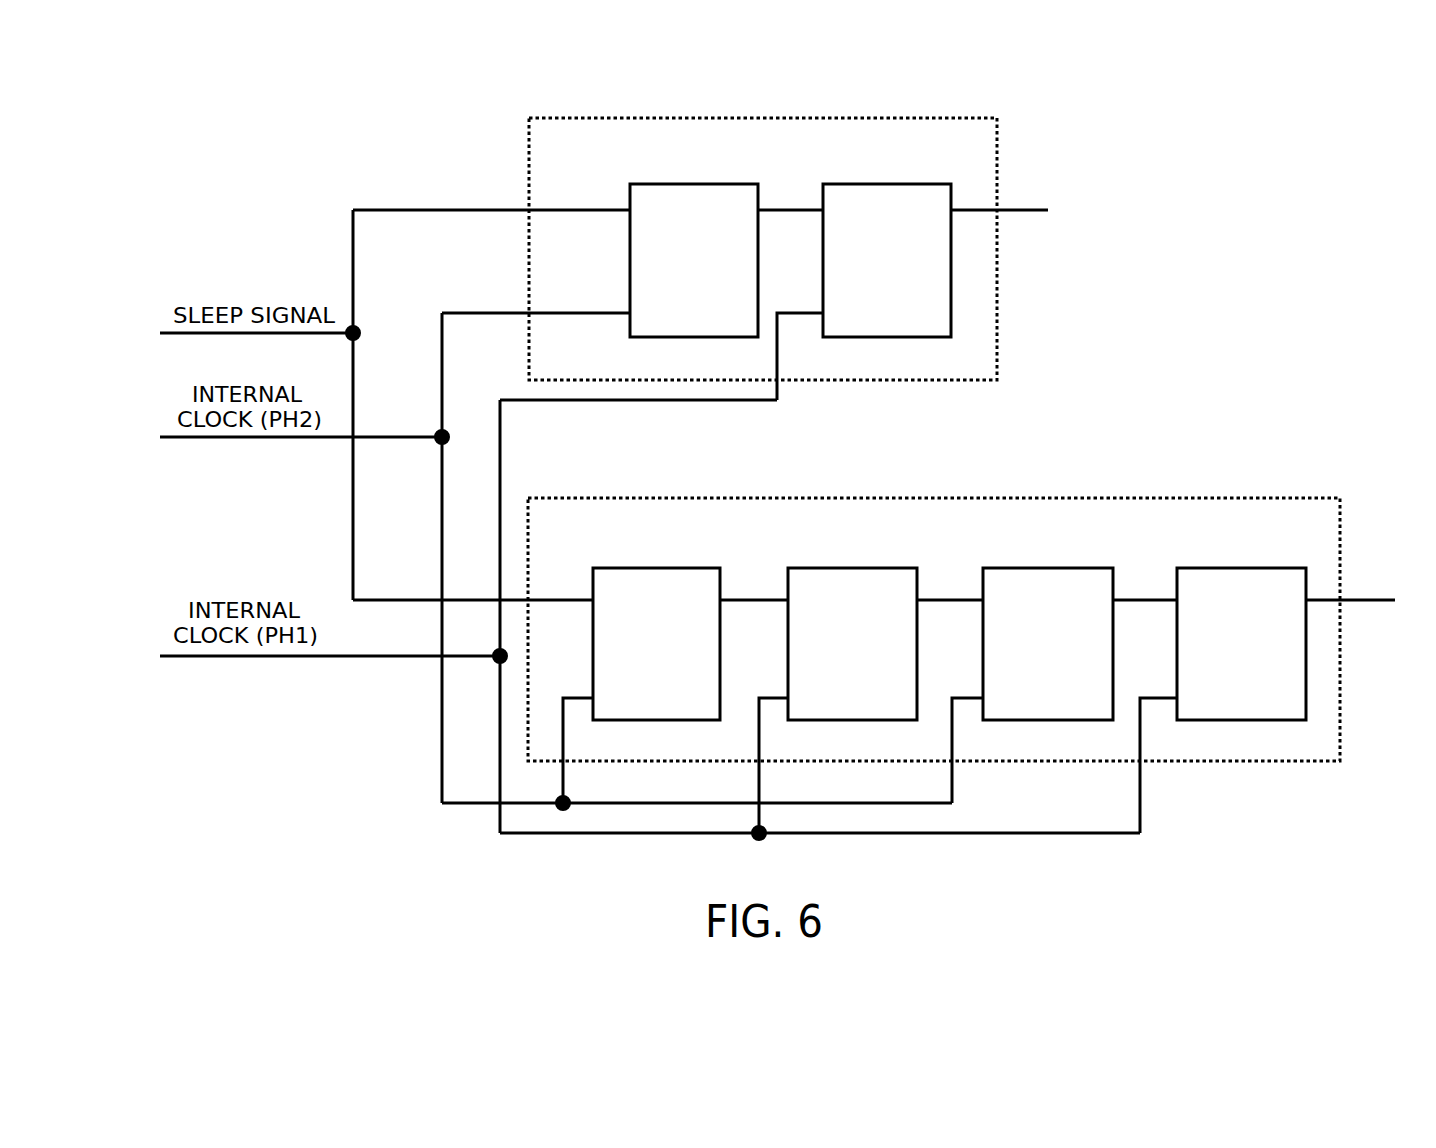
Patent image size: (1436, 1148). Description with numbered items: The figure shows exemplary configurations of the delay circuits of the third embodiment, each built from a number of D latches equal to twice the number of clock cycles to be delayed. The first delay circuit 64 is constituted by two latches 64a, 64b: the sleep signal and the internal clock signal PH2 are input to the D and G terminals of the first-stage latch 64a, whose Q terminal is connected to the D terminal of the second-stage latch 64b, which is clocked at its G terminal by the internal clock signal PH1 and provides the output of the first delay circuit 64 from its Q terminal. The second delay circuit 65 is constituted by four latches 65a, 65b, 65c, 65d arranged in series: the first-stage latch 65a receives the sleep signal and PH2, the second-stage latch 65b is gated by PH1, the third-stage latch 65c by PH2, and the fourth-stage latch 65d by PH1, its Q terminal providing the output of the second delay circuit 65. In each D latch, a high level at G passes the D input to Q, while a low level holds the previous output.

The first delay circuit 64 is at (938, 118).
The latch 64a is at (713, 184).
The latch 64b is at (897, 184).
The second delay circuit 65 is at (1243, 498).
The latch 65a is at (673, 568).
The latch 65b is at (867, 568).
The latch 65c is at (1062, 568).
The latch 65d is at (1243, 568).